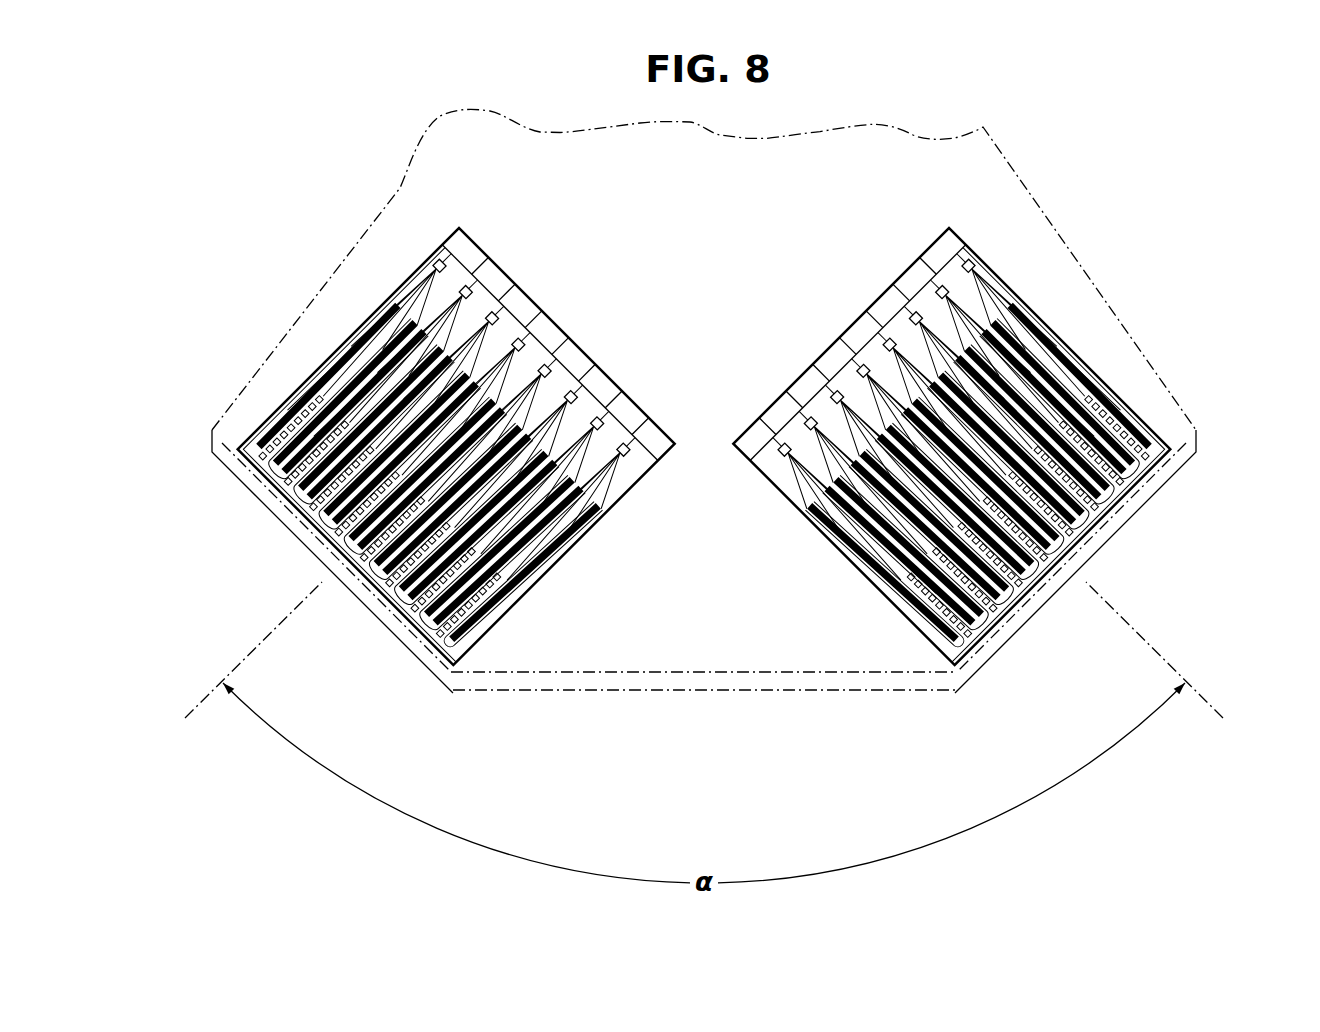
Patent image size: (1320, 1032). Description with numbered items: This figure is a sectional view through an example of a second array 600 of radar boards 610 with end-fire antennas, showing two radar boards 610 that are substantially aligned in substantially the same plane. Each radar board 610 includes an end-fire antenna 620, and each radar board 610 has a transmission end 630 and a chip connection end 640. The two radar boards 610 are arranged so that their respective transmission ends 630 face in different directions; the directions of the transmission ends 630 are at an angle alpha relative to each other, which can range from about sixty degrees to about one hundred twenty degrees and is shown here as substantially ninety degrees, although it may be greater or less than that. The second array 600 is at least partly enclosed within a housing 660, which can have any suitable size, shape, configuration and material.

The second array 600 is at (1240, 608).
The radar board 610 is at (325, 367).
The end-fire antenna 620 is at (282, 529).
The transmission end 630 is at (232, 484).
The chip connection end 640 is at (602, 320).
The housing 660 is at (432, 672).